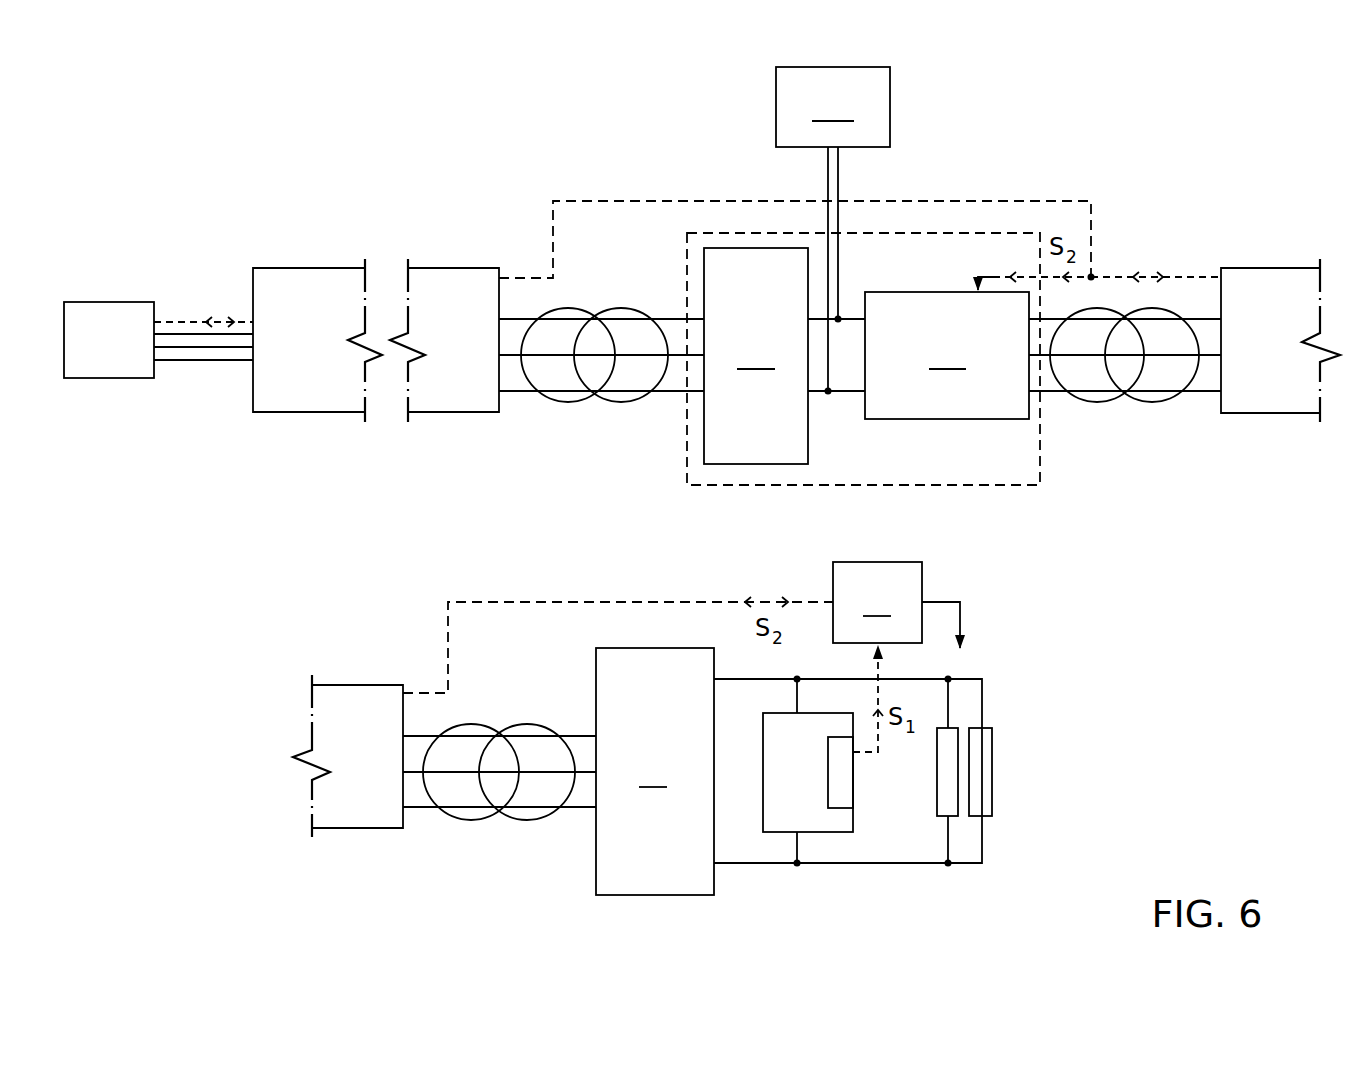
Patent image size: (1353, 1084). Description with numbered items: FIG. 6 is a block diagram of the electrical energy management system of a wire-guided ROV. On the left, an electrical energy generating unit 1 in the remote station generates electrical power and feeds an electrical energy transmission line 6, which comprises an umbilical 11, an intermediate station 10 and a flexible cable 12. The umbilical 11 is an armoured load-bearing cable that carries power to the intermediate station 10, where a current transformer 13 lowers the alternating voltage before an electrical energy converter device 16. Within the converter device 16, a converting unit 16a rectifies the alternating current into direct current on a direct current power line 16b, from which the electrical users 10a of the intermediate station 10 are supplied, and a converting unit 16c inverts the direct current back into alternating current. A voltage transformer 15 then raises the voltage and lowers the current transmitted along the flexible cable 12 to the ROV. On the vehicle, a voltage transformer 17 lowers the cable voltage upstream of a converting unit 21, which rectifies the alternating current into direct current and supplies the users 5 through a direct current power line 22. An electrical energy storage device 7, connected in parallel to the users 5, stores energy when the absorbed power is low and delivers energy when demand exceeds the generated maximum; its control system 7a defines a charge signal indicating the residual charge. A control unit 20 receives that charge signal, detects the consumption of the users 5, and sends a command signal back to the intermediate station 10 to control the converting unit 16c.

The electrical energy generating unit 1 is at (119, 378).
The umbilical 11 is at (331, 277).
The current transformer 13 is at (557, 422).
The intermediate station 10 is at (668, 137).
The electrical users 10a is at (833, 229).
The electrical energy transmission line 6 is at (1172, 173).
The electrical energy converter device 16 is at (686, 484).
The converting unit 16a is at (756, 356).
The direct current power line 16b is at (838, 400).
The converting unit 16c is at (978, 345).
The voltage transformer 15 is at (1117, 430).
The flexible cable 12 is at (1275, 280).
The control unit 20 is at (896, 605).
The converting unit 21 is at (655, 771).
The voltage transformer 17 is at (495, 835).
The electrical energy storage device 7 is at (780, 815).
The control system 7a is at (845, 783).
The users 5 is at (985, 790).
The direct current power line 22 is at (833, 873).